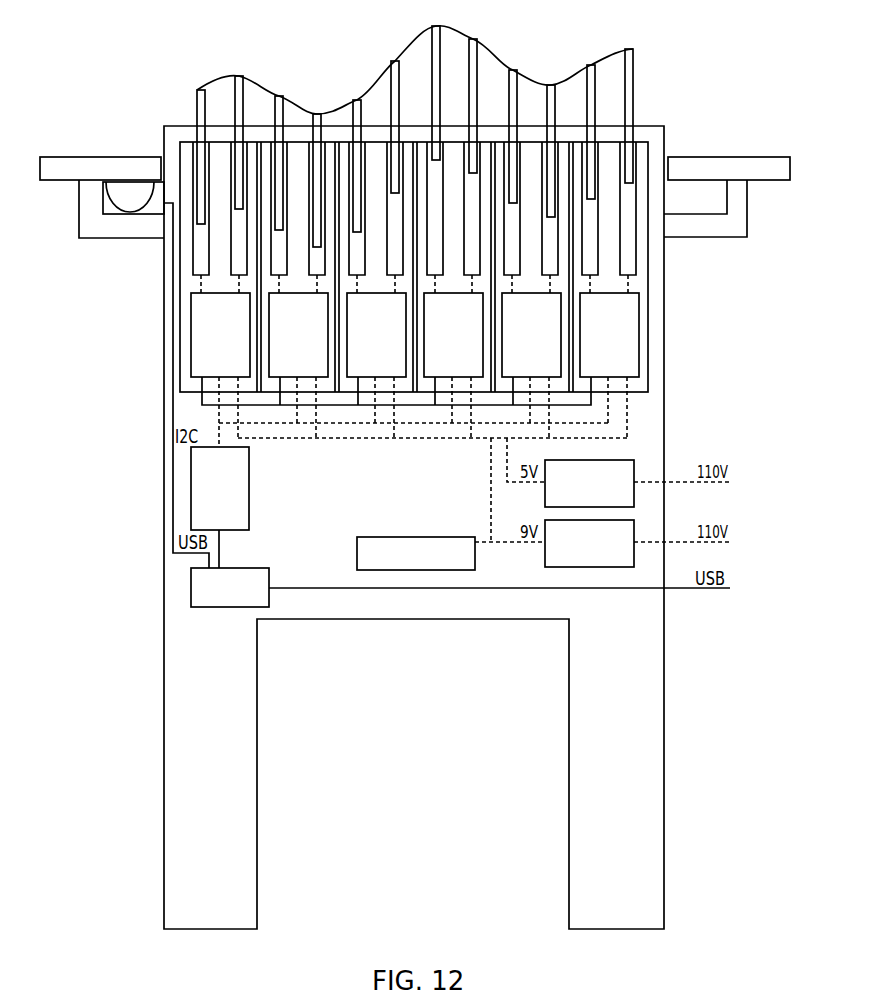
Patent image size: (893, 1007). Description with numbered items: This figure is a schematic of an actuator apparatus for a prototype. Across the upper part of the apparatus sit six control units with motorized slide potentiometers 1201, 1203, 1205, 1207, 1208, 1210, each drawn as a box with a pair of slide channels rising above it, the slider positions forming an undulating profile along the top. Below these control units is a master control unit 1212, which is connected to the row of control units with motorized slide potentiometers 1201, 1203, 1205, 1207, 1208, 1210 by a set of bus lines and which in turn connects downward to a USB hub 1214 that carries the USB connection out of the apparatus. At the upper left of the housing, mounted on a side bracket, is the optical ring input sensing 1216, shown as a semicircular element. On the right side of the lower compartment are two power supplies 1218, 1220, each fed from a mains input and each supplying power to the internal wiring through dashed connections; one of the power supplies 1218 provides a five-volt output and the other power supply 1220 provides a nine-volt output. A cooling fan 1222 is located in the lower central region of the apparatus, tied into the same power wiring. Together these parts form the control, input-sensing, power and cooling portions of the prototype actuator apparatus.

The control unit with motorized slide potentiometer 1201 is at (241, 346).
The control unit with motorized slide potentiometer 1203 is at (319, 346).
The control unit with motorized slide potentiometer 1205 is at (397, 346).
The control unit with motorized slide potentiometer 1207 is at (474, 346).
The control unit with motorized slide potentiometer 1208 is at (552, 346).
The control unit with motorized slide potentiometer 1210 is at (630, 346).
The master control unit 1212 is at (235, 478).
The USB hub 1214 is at (202, 588).
The optical ring input sensing 1216 is at (131, 196).
The power supply 1218 is at (611, 493).
The power supply 1220 is at (611, 553).
The cooling fan 1222 is at (408, 548).